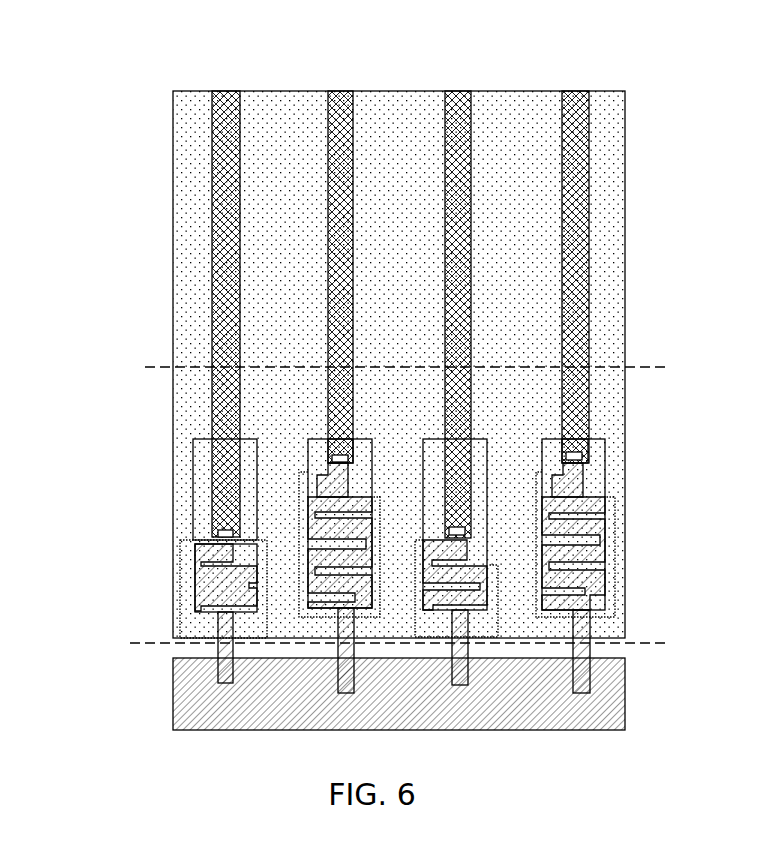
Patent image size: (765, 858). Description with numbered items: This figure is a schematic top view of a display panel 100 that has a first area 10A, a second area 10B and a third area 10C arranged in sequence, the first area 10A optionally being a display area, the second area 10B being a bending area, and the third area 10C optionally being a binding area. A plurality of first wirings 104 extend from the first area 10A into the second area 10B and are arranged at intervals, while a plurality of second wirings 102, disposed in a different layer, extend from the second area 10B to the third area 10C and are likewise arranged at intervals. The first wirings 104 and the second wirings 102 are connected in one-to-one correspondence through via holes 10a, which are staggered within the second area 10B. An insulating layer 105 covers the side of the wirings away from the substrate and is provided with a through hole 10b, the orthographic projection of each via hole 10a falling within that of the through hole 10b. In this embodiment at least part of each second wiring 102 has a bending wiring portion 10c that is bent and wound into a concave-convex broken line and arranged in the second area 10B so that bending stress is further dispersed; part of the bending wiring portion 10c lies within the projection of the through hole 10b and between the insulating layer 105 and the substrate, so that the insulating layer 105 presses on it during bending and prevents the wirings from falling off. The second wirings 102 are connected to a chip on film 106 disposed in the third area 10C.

The display panel 100 is at (83, 56).
The first area 10A is at (173, 192).
The second area 10B is at (173, 535).
The third area 10C is at (370, 691).
The first wirings 104 is at (212, 458).
The insulating layer 105 is at (605, 277).
The via holes 10a is at (592, 447).
The through hole 10b is at (203, 480).
The bending wiring portion 10c is at (193, 579).
The second wirings 102 is at (614, 528).
The chip on film 106 is at (627, 673).